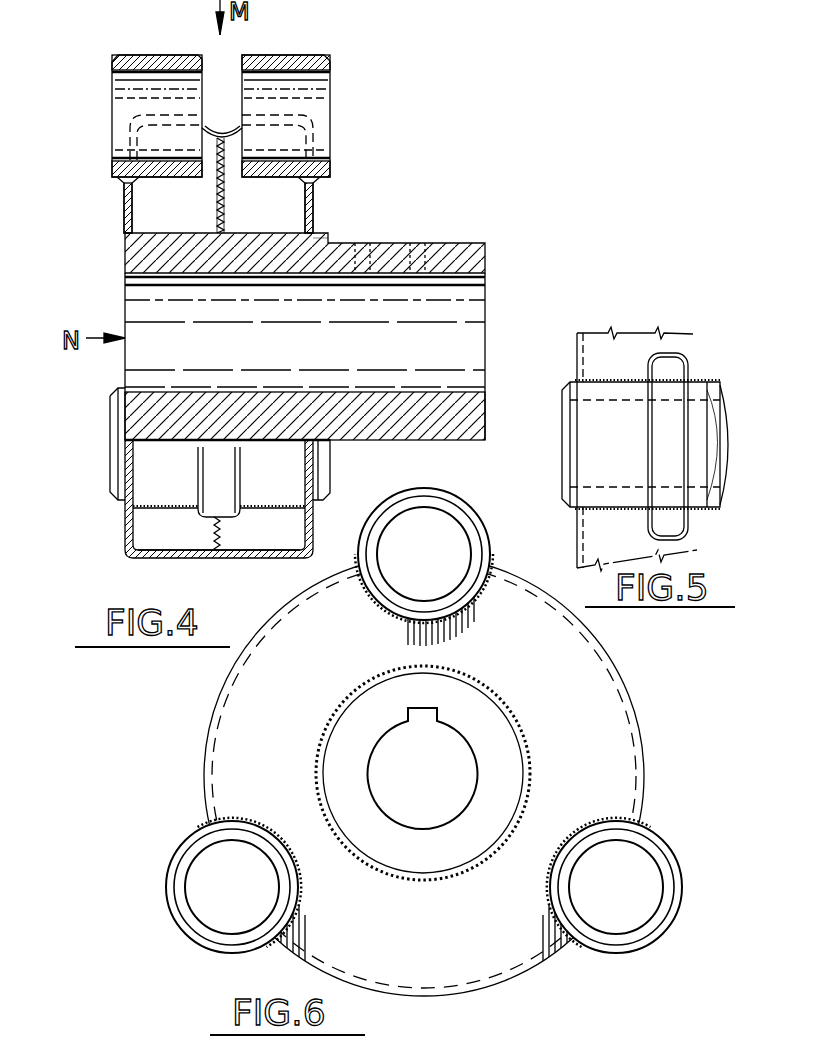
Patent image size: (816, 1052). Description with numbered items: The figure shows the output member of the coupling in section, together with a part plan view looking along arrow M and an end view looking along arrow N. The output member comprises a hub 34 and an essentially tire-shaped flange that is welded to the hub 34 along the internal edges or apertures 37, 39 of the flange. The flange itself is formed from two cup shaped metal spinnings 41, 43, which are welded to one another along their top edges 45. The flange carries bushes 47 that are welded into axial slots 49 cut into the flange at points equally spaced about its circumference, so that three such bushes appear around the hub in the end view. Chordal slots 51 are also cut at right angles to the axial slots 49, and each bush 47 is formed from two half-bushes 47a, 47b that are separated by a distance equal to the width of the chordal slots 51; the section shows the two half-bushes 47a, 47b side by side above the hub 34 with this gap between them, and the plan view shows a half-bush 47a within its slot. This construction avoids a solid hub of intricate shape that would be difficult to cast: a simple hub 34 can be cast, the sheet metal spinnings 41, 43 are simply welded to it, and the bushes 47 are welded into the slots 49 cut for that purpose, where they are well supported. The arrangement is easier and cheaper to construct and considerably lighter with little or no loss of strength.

In FIG. 6, the hub 34 is at (365, 755).
In FIG. 4, the internal edge 37 is at (127, 235).
In FIG. 6, the internal edge 37 is at (518, 715).
In FIG. 4, the internal edge 39 is at (314, 239).
In FIG. 4, the cup shaped metal spinning 41 is at (142, 558).
In FIG. 4, the cup shaped metal spinning 43 is at (250, 559).
In FIG. 4, the top edge 45 is at (224, 213).
In FIG. 4, the bush 47 is at (166, 181).
In FIG. 6, the bush 47 is at (460, 512).
In FIG. 4, the half-bush 47a is at (140, 72).
In FIG. 5, the half-bush 47a is at (626, 480).
In FIG. 4, the half-bush 47b is at (313, 78).
In FIG. 4, the axial slot 49 is at (256, 509).
In FIG. 5, the axial slot 49 is at (582, 387).
In FIG. 6, the axial slot 49 is at (473, 607).
In FIG. 4, the chordal slot 51 is at (200, 459).
In FIG. 5, the chordal slot 51 is at (651, 379).